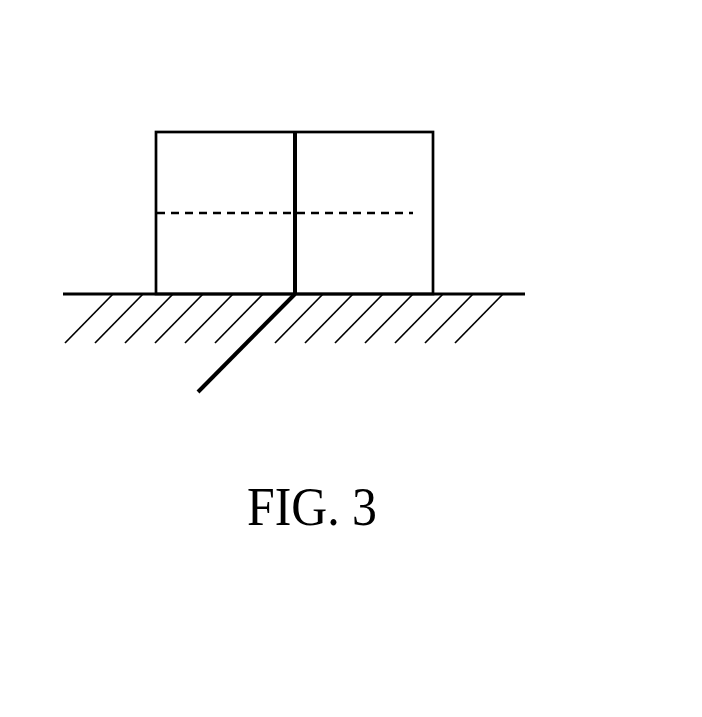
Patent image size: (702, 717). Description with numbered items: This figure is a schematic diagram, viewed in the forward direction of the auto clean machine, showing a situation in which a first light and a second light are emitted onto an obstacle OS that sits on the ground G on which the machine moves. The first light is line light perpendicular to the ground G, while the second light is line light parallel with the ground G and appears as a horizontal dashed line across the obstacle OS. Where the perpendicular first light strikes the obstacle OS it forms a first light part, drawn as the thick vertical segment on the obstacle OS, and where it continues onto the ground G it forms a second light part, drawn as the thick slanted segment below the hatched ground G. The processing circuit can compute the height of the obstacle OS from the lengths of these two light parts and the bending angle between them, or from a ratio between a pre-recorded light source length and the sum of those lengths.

The obstacle OS is at (433, 77).
The ground G is at (505, 280).